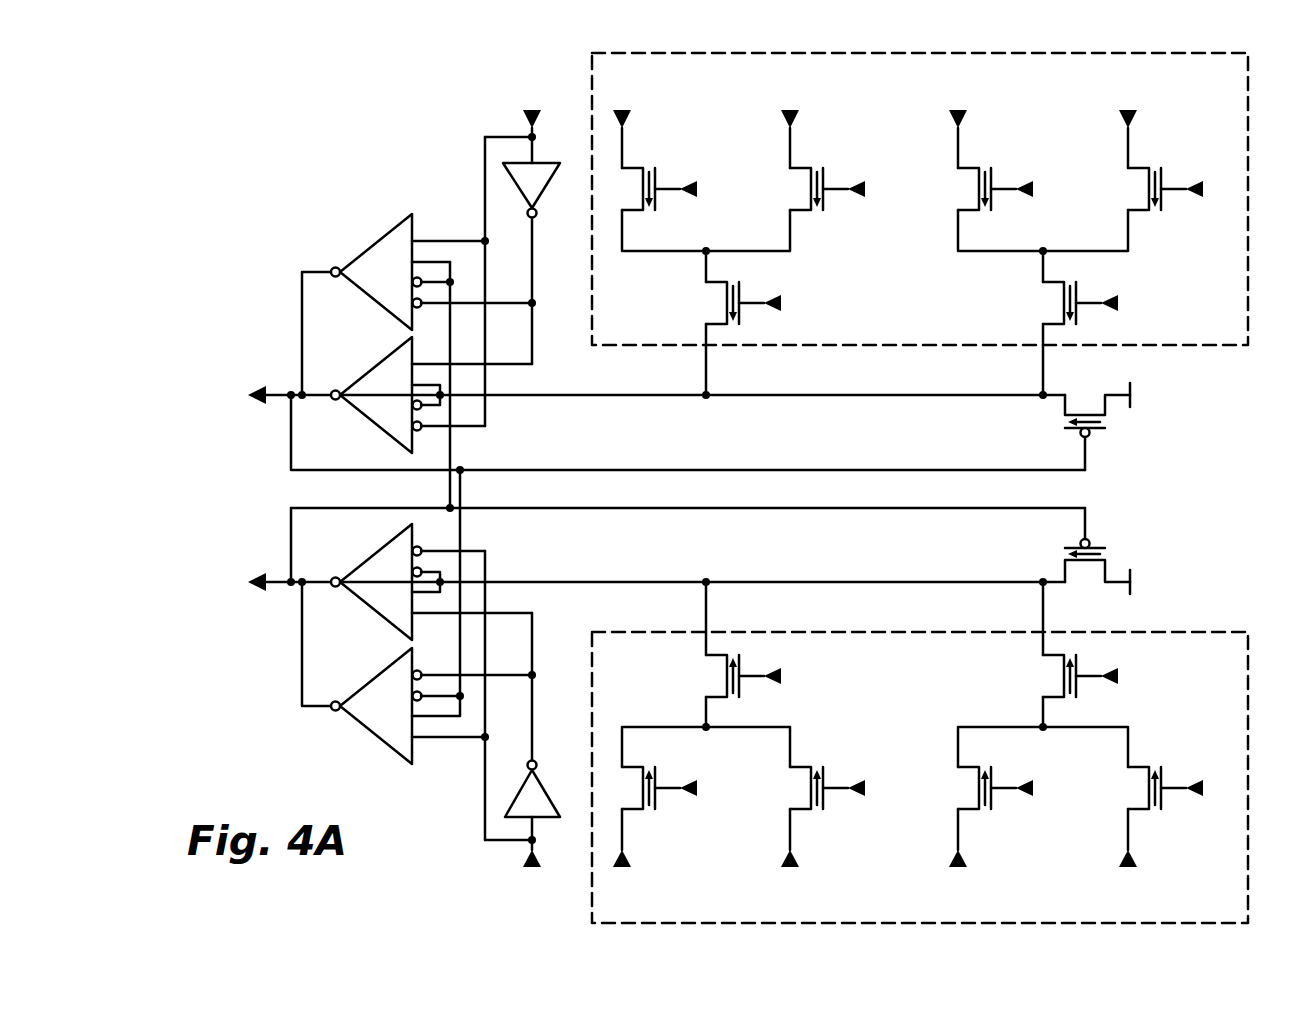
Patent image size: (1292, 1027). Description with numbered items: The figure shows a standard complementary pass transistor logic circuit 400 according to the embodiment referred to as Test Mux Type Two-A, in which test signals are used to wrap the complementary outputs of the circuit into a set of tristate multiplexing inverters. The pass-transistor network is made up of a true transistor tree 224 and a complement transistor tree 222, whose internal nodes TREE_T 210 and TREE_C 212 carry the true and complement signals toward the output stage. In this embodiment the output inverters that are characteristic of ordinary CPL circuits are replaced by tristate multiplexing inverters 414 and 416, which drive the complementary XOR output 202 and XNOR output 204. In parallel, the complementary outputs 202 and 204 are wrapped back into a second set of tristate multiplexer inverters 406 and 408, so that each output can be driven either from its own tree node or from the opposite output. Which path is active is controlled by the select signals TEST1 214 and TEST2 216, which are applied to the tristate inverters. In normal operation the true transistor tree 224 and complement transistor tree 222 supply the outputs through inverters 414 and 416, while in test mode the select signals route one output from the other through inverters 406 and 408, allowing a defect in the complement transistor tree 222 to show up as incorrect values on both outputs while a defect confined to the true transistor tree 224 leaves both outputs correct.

The standard CPL circuit 400 is at (278, 149).
The XOR output 202 is at (248, 382).
The XNOR output 204 is at (248, 600).
The tristate multiplexer inverter 406 is at (364, 256).
The tristate multiplexing inverter 414 is at (364, 380).
The tristate multiplexing inverter 416 is at (364, 601).
The tristate multiplexer inverter 408 is at (364, 725).
The TEST1 select signal 214 is at (522, 108).
The TEST2 select signal 216 is at (522, 870).
The internal node TREE_T 210 is at (948, 396).
The internal node TREE_C 212 is at (948, 582).
The true transistor tree 224 is at (1206, 346).
The complement transistor tree 222 is at (1206, 632).